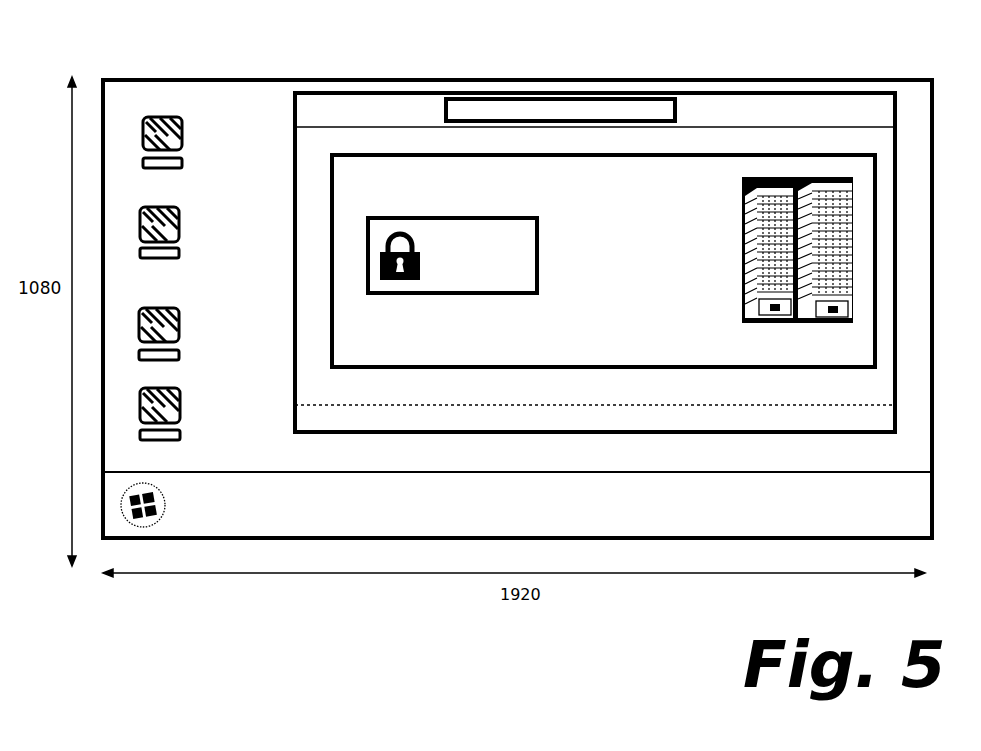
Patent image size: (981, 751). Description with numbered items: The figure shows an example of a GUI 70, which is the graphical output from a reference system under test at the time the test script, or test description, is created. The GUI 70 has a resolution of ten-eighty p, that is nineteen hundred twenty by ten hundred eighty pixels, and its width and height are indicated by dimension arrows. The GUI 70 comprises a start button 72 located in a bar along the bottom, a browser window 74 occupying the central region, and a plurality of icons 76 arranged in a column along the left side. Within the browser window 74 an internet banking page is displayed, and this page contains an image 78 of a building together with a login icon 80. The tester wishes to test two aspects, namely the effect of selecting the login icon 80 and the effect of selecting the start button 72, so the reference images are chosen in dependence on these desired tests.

The GUI 70 is at (295, 80).
The start button 72 is at (170, 497).
The browser window 74 is at (815, 98).
The icons 76 is at (175, 278).
The image of a building 78 is at (742, 276).
The login icon 80 is at (528, 215).